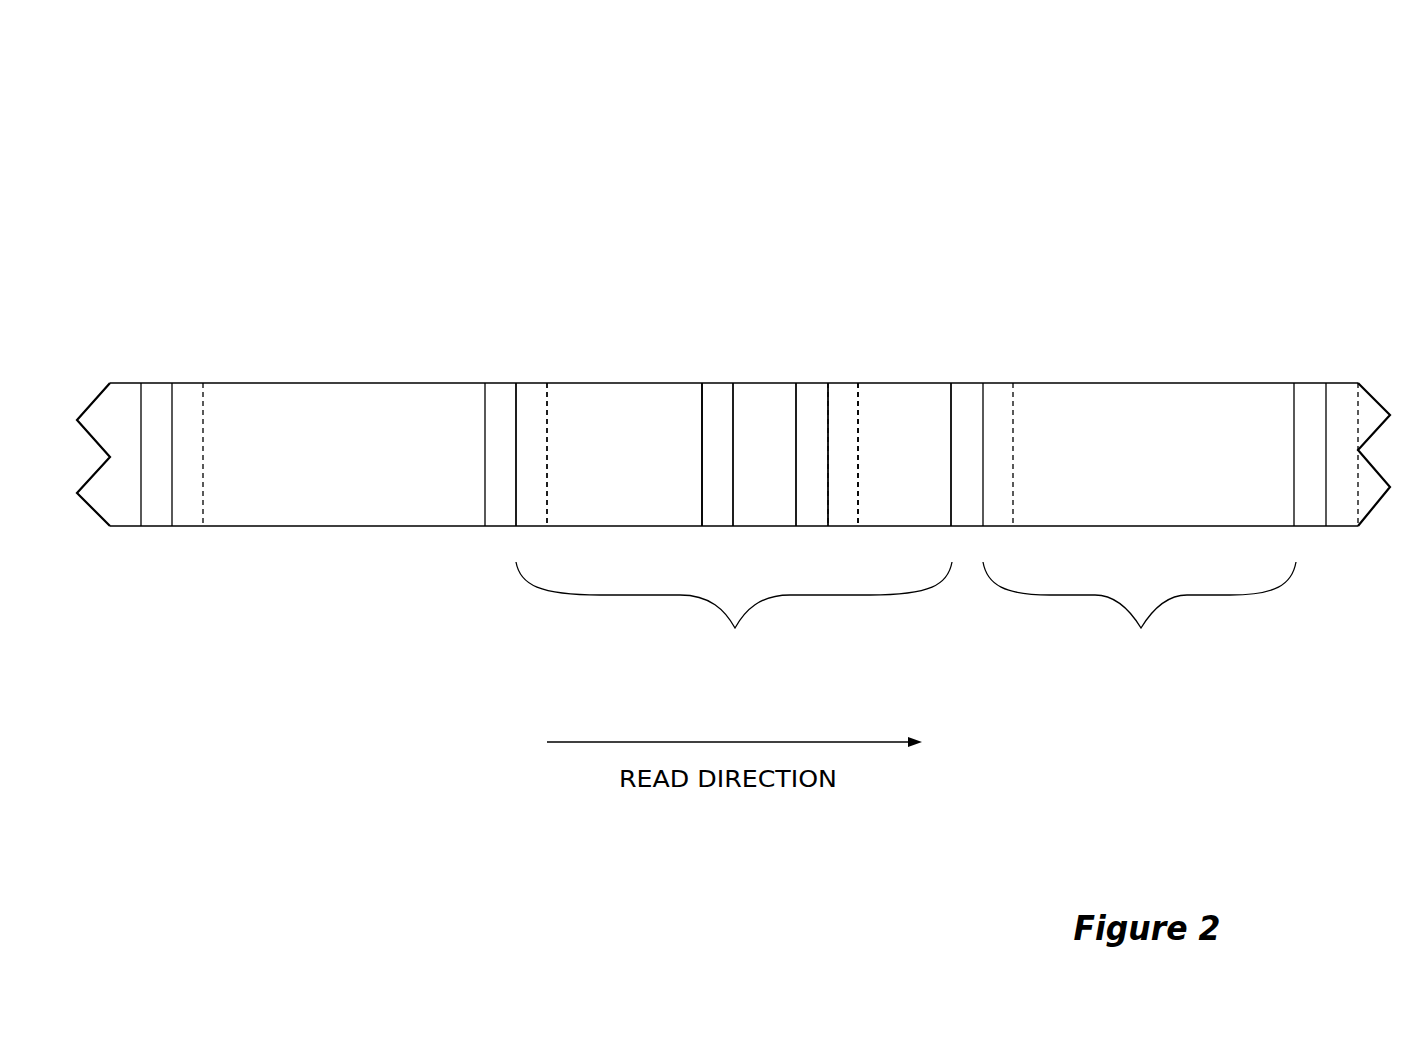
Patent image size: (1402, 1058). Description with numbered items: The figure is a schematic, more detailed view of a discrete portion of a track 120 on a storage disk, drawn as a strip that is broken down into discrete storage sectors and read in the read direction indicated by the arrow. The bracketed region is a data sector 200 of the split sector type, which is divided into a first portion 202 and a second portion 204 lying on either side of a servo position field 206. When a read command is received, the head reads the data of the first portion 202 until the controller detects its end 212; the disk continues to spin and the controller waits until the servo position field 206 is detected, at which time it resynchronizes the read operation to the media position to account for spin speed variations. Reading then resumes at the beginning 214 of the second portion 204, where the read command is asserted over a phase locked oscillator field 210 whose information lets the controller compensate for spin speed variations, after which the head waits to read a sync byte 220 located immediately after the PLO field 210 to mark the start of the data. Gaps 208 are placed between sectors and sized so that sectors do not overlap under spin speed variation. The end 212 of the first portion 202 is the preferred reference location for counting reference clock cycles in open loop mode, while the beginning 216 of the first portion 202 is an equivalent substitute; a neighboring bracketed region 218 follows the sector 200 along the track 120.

The track 120 is at (452, 107).
The data sector 200 is at (734, 611).
The first portion 202 is at (608, 417).
The second portion 204 is at (904, 425).
The servo position field 206 is at (764, 417).
The gap 208 is at (155, 418).
The phase locked oscillator field 210 is at (848, 400).
The end of first portion 212 is at (702, 453).
The beginning of second portion 214 is at (827, 453).
The beginning of first portion 216 is at (516, 489).
The next data block 218 is at (1139, 611).
The sync byte 220 is at (858, 398).